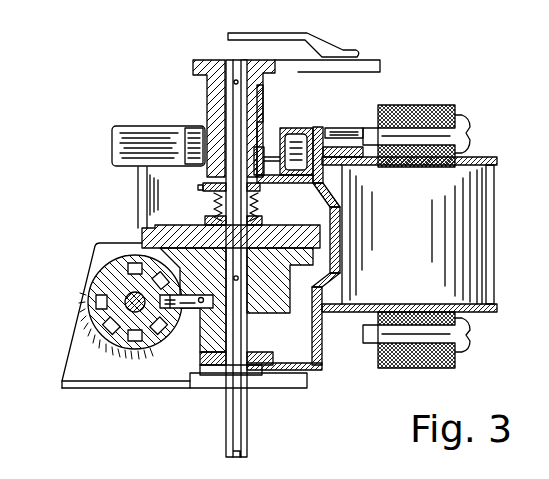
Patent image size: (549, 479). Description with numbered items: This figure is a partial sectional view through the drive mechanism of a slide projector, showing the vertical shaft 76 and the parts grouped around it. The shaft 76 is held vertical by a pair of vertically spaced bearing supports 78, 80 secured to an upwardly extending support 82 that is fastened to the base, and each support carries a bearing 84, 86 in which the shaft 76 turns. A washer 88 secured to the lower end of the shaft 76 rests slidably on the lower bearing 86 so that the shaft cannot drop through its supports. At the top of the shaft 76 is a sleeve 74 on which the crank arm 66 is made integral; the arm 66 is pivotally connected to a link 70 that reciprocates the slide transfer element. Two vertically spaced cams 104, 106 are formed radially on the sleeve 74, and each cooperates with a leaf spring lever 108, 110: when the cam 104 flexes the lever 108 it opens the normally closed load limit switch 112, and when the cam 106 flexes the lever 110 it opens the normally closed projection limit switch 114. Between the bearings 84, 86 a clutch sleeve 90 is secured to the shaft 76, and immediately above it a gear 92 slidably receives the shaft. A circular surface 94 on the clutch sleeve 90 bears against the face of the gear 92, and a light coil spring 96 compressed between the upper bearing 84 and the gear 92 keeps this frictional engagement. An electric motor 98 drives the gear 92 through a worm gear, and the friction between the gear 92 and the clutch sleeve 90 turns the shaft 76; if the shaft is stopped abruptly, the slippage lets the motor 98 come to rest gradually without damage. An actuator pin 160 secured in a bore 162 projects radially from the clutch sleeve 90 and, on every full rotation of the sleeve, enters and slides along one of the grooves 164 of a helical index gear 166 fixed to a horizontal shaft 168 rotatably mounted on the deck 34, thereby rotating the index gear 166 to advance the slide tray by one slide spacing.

The deck 34 is at (75, 378).
The arm 66 is at (366, 68).
The link 70 is at (338, 42).
The sleeve 74 is at (208, 100).
The shaft 76 is at (230, 97).
The bearing support 78 is at (275, 184).
The bearing support 80 is at (284, 385).
The support 82 is at (348, 314).
The bearing 84 is at (212, 187).
The bearing 86 is at (220, 374).
The washer 88 is at (205, 354).
The clutch sleeve 90 is at (268, 316).
The gear 92 is at (163, 222).
The circular surface 94 is at (150, 240).
The coil spring 96 is at (216, 207).
The electric motor 98 is at (473, 245).
The cam 104 is at (256, 140).
The cam 106 is at (265, 143).
The leaf spring lever 108 is at (300, 126).
The leaf spring lever 110 is at (194, 128).
The load limit switch 112 is at (347, 123).
The projection limit switch 114 is at (118, 146).
The actuator pin 160 is at (177, 310).
The bore 162 is at (202, 306).
The grooves 164 is at (110, 283).
The helical index gear 166 is at (118, 308).
The shaft 168 is at (123, 297).